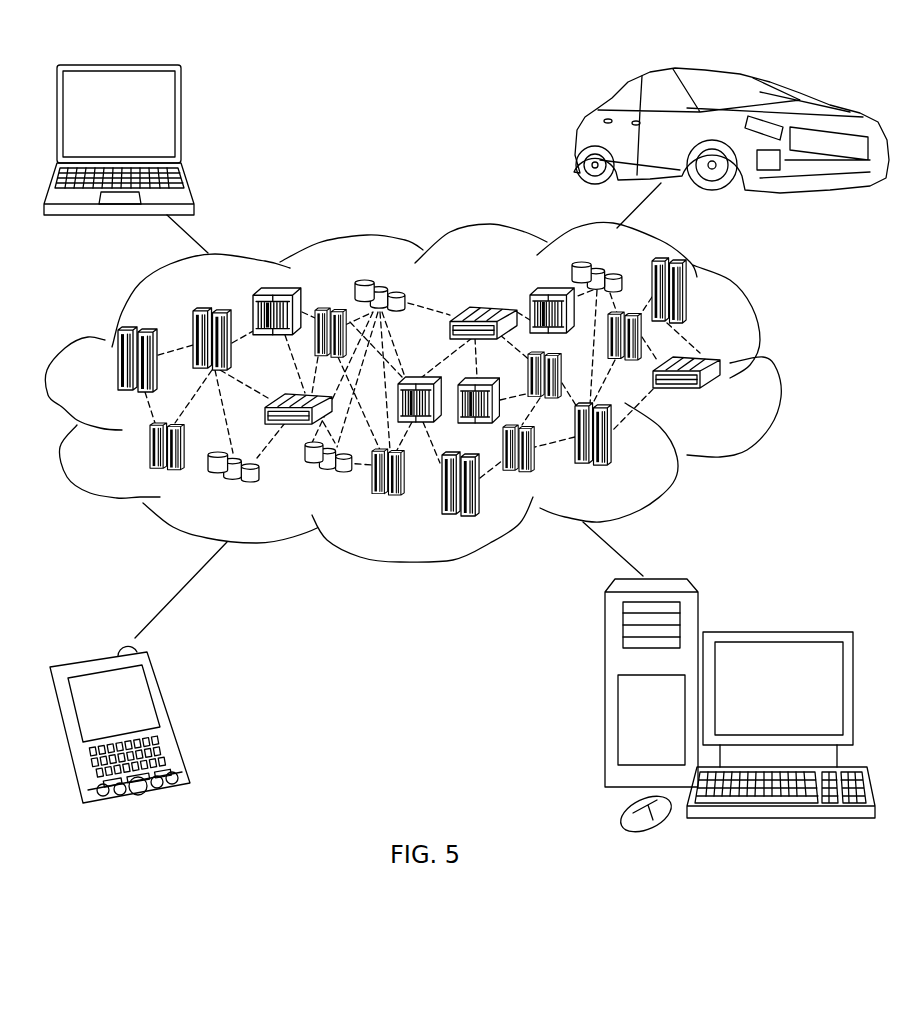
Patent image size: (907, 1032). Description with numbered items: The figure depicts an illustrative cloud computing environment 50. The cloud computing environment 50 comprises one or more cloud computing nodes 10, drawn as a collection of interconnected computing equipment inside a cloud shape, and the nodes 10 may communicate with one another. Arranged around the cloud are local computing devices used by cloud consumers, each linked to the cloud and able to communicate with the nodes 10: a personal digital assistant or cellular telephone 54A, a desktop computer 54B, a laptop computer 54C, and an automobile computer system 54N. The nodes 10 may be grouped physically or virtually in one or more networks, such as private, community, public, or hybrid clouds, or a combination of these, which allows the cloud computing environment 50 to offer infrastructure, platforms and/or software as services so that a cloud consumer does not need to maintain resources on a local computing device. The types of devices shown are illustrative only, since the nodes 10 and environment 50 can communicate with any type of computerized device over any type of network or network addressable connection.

The cloud computing environment 50 is at (777, 367).
The cloud computing nodes 10 is at (732, 399).
The personal digital assistant or cellular telephone 54A is at (173, 712).
The desktop computer 54B is at (777, 630).
The laptop computer 54C is at (182, 118).
The automobile computer system 54N is at (575, 137).